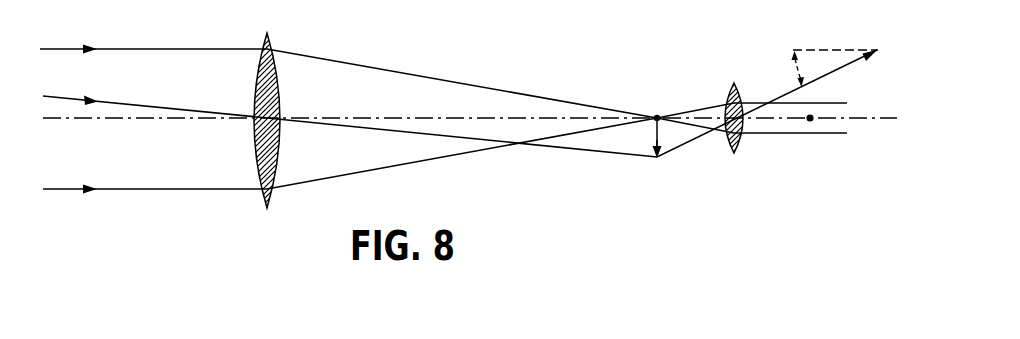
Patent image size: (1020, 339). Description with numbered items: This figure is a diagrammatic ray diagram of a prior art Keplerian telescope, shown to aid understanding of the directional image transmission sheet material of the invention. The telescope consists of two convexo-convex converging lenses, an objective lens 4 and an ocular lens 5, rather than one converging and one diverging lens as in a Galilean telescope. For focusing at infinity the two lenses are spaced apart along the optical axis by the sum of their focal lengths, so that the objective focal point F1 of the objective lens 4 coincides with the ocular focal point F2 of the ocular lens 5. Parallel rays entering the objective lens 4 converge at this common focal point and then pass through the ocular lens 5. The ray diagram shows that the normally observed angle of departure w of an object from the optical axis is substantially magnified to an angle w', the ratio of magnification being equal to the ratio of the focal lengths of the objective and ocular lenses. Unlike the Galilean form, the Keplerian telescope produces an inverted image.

The objective lens 4 is at (256, 70).
The ocular lens 5 is at (730, 149).
The focal point of the objective lens F1 is at (657, 116).
The focal point of the ocular lens F2 is at (666, 143).
The angle of departure w is at (460, 103).
The magnified angle w' is at (835, 68).